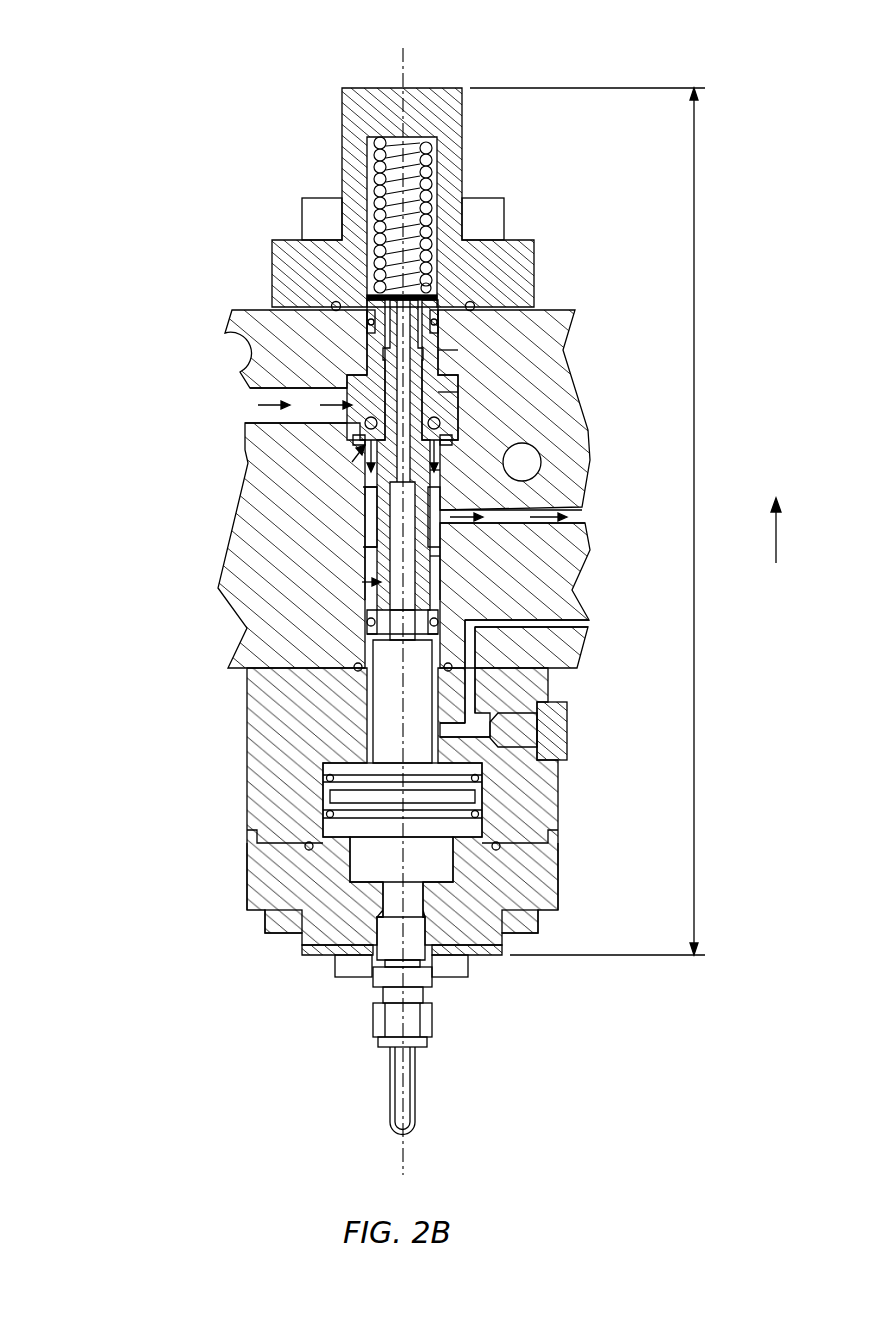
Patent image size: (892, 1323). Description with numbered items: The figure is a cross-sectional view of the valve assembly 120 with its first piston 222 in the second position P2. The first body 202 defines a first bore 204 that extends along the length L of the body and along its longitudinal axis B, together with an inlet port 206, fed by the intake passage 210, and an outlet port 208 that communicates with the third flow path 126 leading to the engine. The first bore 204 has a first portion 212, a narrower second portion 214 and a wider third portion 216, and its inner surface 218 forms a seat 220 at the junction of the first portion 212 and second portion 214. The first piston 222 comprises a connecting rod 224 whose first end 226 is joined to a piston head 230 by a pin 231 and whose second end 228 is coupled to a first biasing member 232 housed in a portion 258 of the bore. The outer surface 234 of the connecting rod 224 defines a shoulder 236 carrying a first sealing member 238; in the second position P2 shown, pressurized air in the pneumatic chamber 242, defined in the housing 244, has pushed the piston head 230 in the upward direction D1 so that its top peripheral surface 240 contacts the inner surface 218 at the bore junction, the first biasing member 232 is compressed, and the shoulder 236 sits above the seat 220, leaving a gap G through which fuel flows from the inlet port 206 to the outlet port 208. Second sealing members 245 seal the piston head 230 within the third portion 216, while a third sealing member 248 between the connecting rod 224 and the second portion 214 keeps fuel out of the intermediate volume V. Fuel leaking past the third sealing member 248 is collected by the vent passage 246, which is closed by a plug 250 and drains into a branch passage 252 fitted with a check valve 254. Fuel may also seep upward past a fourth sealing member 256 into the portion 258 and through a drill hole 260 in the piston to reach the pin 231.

The valve assembly 120 is at (152, 90).
The third flow path 126 is at (445, 530).
The first body 202 is at (555, 327).
The first bore 204 is at (450, 372).
The inlet port 206 is at (245, 405).
The outlet port 208 is at (445, 556).
The intake passage 210 is at (250, 394).
The first portion 212 is at (445, 360).
The second portion 214 is at (440, 484).
The third portion 216 is at (545, 838).
The inner surface 218 is at (455, 393).
The seat 220 is at (362, 463).
The first piston 222 is at (362, 582).
The connecting rod 224 is at (365, 520).
The first end 226 is at (375, 640).
The second end 228 is at (370, 297).
The piston head 230 is at (455, 795).
The pin 231 is at (388, 733).
The first biasing member 232 is at (405, 160).
The outer surface 234 is at (365, 552).
The shoulder 236 is at (366, 420).
The first sealing member 238 is at (441, 422).
The top peripheral surface 240 is at (482, 770).
The pneumatic chamber 242 is at (365, 872).
The housing 244 is at (262, 868).
The second sealing members 245 is at (326, 812).
The vent passage 246 is at (478, 737).
The third sealing member 248 is at (367, 625).
The plug 250 is at (560, 740).
The branch passage 252 is at (470, 640).
The check valve 254 is at (470, 680).
The fourth sealing member 256 is at (368, 320).
The portion 258 is at (372, 218).
The drill hole 260 is at (405, 455).
The longitudinal axis B is at (403, 597).
The gap G is at (352, 440).
The second position P2 is at (365, 488).
The intermediate volume V is at (335, 830).
The length L is at (698, 527).
The upward direction D1 is at (778, 548).